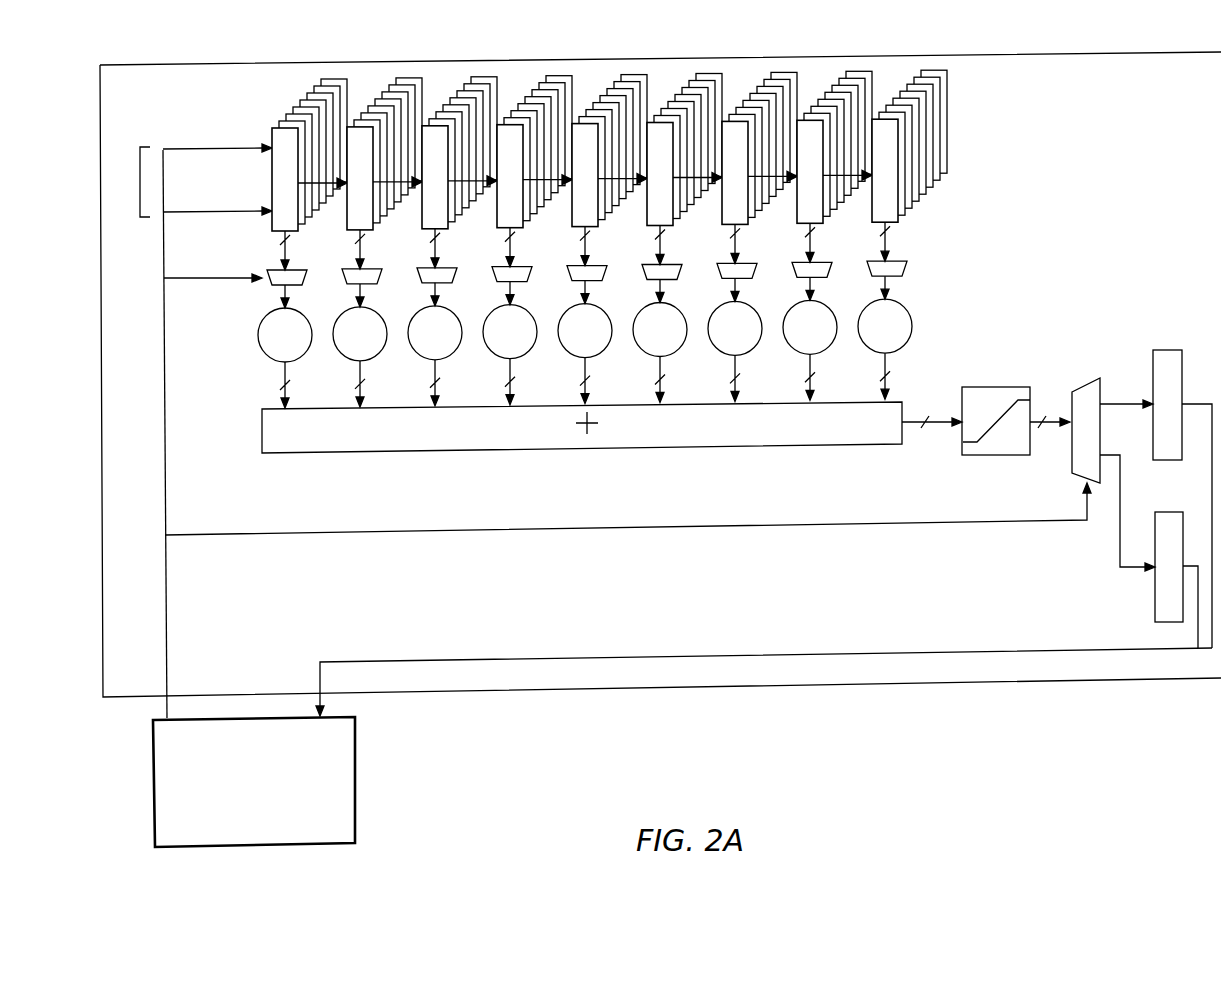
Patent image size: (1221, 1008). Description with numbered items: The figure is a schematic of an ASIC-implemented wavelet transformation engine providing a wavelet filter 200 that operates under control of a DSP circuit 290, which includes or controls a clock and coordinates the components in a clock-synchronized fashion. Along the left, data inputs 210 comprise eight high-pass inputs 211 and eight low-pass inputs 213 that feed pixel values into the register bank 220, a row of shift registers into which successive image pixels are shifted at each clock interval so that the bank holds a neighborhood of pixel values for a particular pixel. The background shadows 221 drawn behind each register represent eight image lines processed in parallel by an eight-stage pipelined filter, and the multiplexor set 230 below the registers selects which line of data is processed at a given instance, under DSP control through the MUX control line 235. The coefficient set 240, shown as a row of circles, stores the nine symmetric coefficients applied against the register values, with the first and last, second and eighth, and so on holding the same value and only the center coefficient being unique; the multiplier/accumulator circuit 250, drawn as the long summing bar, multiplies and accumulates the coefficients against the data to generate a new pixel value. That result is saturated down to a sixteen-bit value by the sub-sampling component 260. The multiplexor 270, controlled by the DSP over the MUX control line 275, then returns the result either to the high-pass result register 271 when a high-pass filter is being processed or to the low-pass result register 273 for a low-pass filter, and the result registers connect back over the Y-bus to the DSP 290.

The wavelet filter 200 is at (1085, 52).
The data inputs 210 is at (138, 432).
The high-pass inputs 211 is at (175, 149).
The low-pass inputs 213 is at (175, 212).
The register bank 220 is at (646, 148).
The background shadows 221 is at (292, 118).
The multiplexor set 230 is at (1010, 238).
The MUX control line 235 is at (192, 279).
The coefficient set 240 is at (1010, 293).
The multiplier/accumulator circuit 250 is at (510, 450).
The sub-sampling component 260 is at (990, 456).
The multiplexor 270 is at (1090, 378).
The high-pass result register 271 is at (1163, 350).
The low-pass result register 273 is at (1155, 591).
The MUX control line 275 is at (613, 528).
The DSP circuit 290 is at (356, 774).